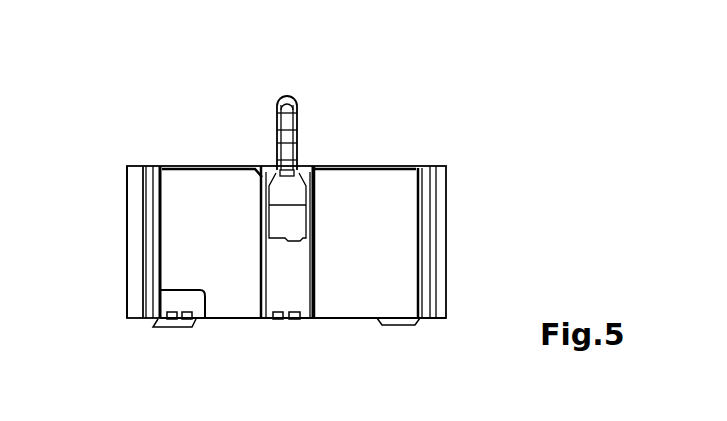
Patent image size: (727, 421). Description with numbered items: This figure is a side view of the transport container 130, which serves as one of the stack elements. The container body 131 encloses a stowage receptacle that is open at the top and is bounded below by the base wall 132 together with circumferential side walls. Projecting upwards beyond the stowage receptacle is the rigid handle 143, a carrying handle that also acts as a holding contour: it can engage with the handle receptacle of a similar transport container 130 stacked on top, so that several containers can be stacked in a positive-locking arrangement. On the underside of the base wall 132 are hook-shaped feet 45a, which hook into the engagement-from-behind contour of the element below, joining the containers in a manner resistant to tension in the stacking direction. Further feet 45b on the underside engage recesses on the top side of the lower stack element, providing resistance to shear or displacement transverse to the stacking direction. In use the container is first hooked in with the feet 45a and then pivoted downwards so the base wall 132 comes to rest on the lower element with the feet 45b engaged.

The transport container 130 is at (460, 222).
The container body 131 is at (127, 232).
The base wall 132 is at (245, 321).
The rigid handle 143 is at (279, 112).
The hook-shaped feet 45a is at (175, 324).
The feet 45b is at (403, 326).